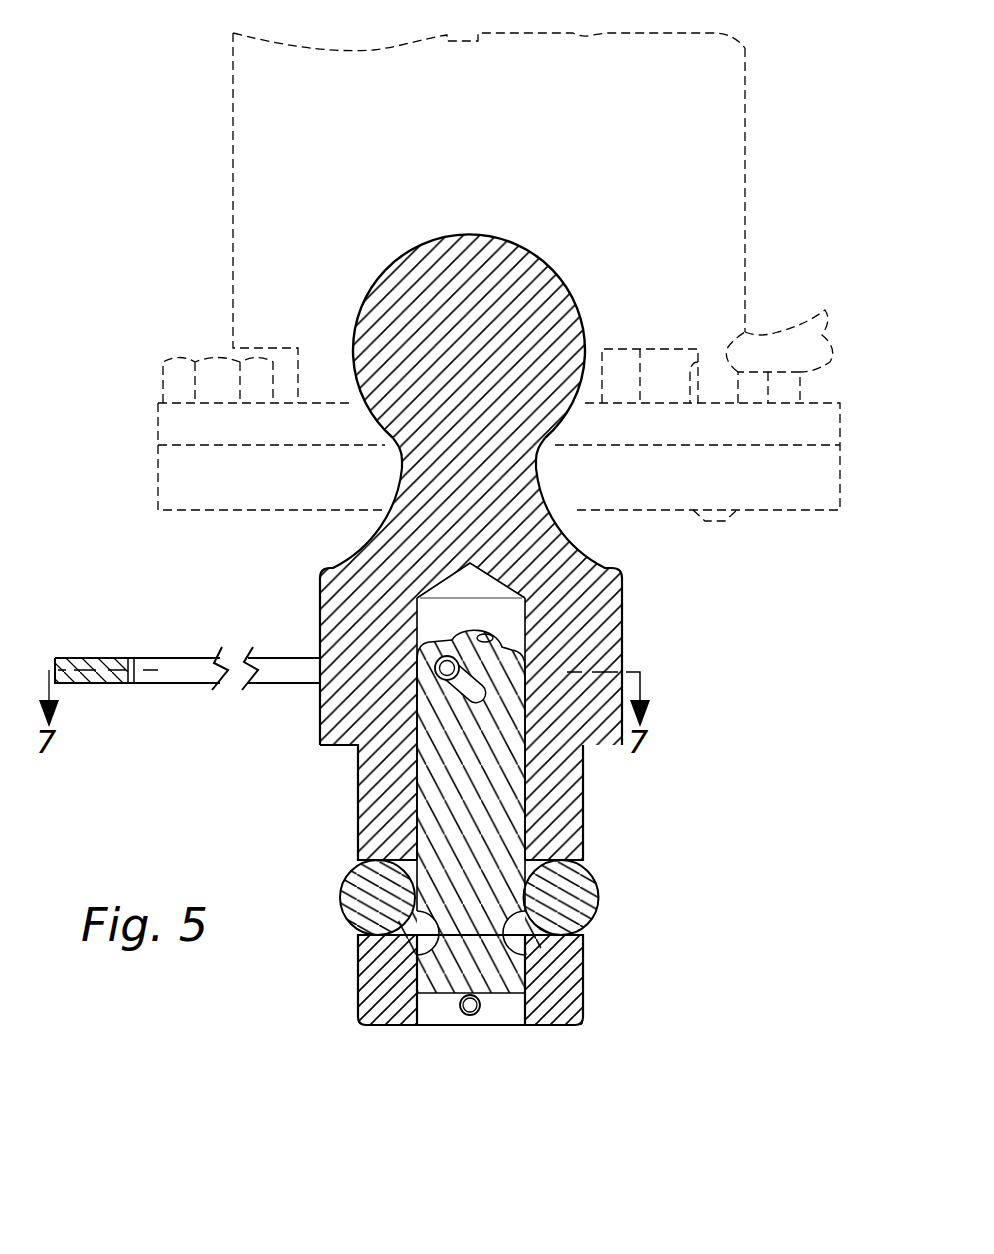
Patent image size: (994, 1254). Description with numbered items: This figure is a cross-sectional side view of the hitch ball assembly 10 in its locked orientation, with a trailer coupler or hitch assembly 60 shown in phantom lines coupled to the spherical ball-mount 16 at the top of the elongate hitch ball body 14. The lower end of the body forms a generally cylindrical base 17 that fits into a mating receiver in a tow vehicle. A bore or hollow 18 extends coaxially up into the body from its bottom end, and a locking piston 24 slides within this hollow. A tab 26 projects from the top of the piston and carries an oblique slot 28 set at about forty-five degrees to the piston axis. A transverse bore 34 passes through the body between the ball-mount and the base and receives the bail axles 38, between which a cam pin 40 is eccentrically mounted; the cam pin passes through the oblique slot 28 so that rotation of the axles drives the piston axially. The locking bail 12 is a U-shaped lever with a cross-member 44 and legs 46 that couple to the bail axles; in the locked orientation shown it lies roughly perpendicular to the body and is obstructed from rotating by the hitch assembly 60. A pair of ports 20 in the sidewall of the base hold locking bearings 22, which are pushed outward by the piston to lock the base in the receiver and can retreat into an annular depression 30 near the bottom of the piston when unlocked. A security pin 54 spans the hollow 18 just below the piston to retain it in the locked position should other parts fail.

The hitch ball assembly 10 is at (132, 260).
The locking bail 12 is at (170, 656).
The hitch ball body 14 is at (622, 602).
The ball-mount 16 is at (576, 307).
The base 17 is at (357, 791).
The hollow 18 is at (497, 1013).
The ports 20 is at (547, 860).
The locking bearing 22 is at (598, 885).
The locking piston 24 is at (445, 994).
The tab 26 is at (522, 650).
The oblique slot 28 is at (463, 680).
The annular depression 30 is at (510, 950).
The transverse bore 34 is at (497, 643).
The bail axles 38 is at (458, 633).
The cam pin 40 is at (466, 702).
The cross-member 44 is at (100, 686).
The leg 46 is at (275, 686).
The security pin 54 is at (470, 1016).
The hitch assembly 60 is at (232, 120).